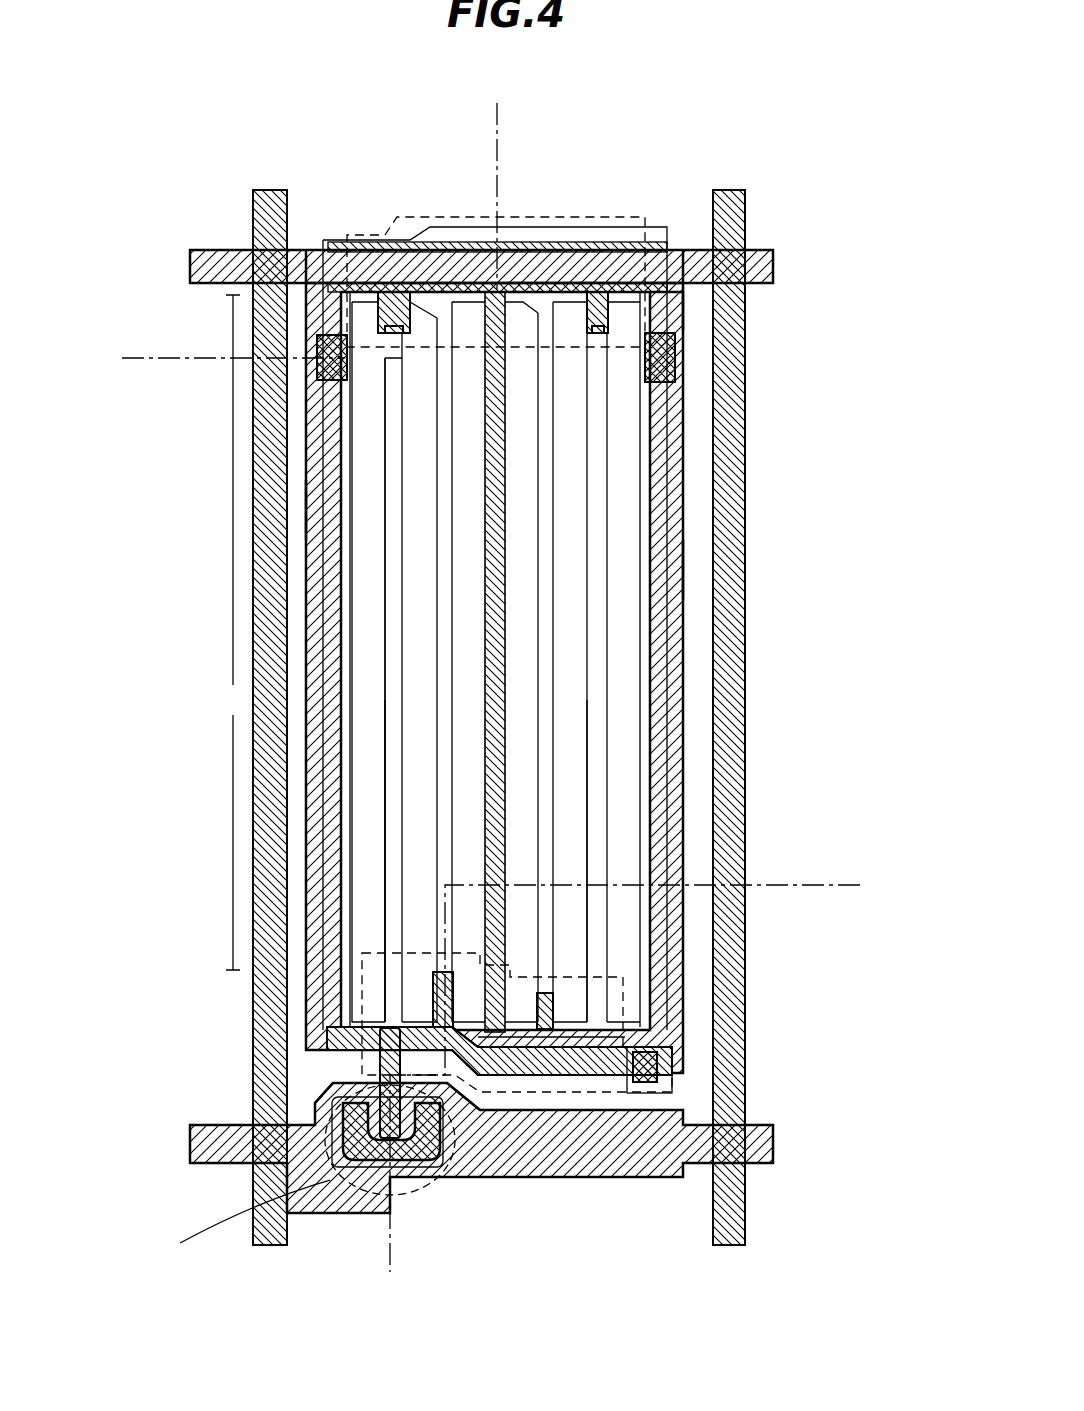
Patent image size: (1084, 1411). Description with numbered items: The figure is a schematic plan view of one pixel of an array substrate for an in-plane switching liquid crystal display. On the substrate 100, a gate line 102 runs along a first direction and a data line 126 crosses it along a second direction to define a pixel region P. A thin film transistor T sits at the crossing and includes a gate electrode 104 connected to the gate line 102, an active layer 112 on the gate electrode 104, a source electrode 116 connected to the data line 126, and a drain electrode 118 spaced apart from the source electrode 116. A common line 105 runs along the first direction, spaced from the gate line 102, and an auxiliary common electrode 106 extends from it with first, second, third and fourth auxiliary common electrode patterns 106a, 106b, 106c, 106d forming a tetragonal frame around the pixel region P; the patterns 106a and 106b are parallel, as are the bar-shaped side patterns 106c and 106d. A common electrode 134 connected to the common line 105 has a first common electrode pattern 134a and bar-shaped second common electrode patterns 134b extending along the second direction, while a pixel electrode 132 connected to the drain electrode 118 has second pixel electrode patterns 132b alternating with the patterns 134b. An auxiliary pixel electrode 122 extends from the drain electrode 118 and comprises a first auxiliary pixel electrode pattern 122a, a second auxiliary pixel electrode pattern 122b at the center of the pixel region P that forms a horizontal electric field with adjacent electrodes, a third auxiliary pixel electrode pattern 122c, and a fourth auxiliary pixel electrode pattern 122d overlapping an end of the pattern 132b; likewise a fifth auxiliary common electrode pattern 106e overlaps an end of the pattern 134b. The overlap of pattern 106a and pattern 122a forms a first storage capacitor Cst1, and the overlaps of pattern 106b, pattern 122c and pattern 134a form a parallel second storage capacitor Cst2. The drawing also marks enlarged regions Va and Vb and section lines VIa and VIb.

The substrate 100 is at (826, 1253).
The gate line 102 is at (773, 1142).
The gate electrode 104 is at (320, 1095).
The common line 105 is at (773, 270).
The auxiliary common electrode 106 is at (692, 500).
The first auxiliary common electrode pattern 106a is at (550, 1112).
The second auxiliary common electrode pattern 106b is at (690, 250).
The third auxiliary common electrode pattern 106c is at (307, 510).
The fourth auxiliary common electrode pattern 106d is at (683, 570).
The fifth auxiliary common electrode pattern 106e is at (548, 993).
The active layer 112 is at (345, 1190).
The source electrode 116 is at (432, 1180).
The drain electrode 118 is at (330, 1045).
The auxiliary pixel electrode 122 is at (515, 700).
The first auxiliary pixel electrode pattern 122a is at (592, 1078).
The second auxiliary pixel electrode pattern 122b is at (330, 745).
The third auxiliary pixel electrode pattern 122c is at (613, 258).
The fourth auxiliary pixel electrode pattern 122d is at (400, 340).
The data line 126 is at (745, 450).
The pixel electrode 132 is at (675, 1052).
The second pixel electrode pattern 132b is at (600, 770).
The common electrode 134 is at (532, 222).
The first common electrode pattern 134a is at (565, 242).
The second common electrode pattern 134b is at (690, 412).
The pixel region P is at (233, 632).
The thin film transistor T is at (239, 1222).
The first storage capacitor Cst1 is at (612, 1260).
The second storage capacitor Cst2 is at (550, 147).
The region Va is at (385, 222).
The region Vb is at (623, 990).
The section line VIa is at (860, 874).
The section line VIb is at (488, 103).